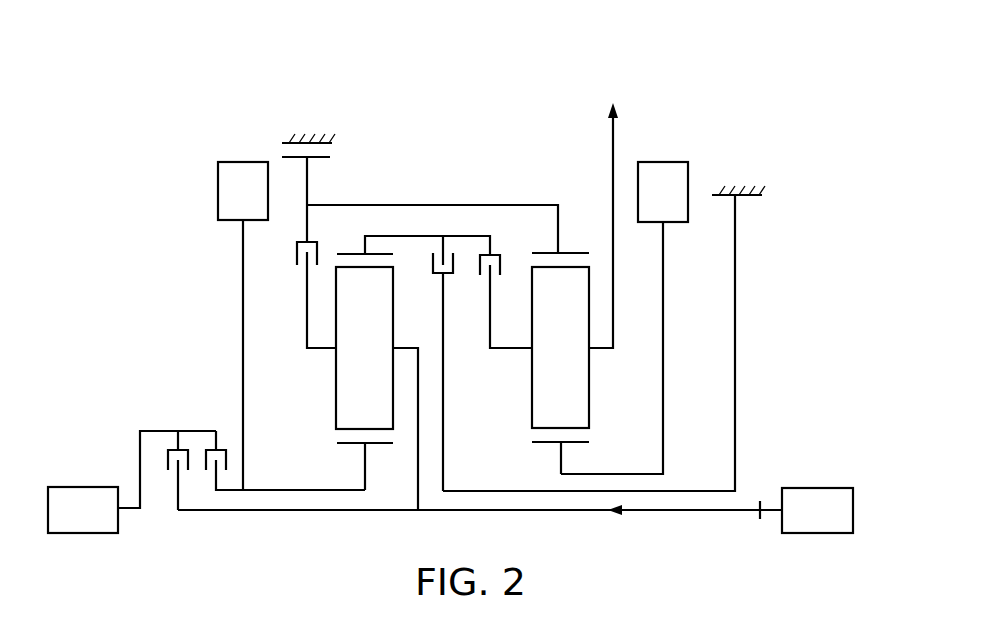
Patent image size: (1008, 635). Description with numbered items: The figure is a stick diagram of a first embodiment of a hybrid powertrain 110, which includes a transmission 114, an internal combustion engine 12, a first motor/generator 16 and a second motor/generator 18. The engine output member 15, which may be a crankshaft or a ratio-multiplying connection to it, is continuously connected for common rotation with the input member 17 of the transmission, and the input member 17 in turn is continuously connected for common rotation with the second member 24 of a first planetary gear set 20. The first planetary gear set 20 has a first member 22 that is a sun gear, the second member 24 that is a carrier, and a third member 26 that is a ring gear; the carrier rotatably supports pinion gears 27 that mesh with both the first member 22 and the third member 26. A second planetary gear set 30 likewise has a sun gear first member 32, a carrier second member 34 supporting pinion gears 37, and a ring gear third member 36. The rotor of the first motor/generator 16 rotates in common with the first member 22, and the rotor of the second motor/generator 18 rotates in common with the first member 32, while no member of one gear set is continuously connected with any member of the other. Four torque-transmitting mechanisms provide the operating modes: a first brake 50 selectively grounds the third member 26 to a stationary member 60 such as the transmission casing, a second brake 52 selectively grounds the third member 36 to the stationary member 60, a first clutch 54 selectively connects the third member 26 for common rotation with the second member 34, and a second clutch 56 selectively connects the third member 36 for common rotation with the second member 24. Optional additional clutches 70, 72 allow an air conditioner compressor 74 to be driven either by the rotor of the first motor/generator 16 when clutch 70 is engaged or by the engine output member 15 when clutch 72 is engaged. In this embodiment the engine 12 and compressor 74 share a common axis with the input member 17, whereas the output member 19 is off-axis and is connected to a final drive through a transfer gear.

The powertrain 110 is at (647, 61).
The transmission 114 is at (471, 133).
The internal combustion engine 12 is at (817, 510).
The engine output member 15 is at (767, 507).
The input member 17 is at (746, 517).
The first motor/generator 16 is at (243, 326).
The second motor/generator 18 is at (624, 318).
The output member 19 is at (613, 140).
The first planetary gear set 20 is at (361, 388).
The first member of first planetary gear set 22 is at (355, 445).
The second member of first planetary gear set 24 is at (407, 349).
The third member of first planetary gear set 26 is at (363, 253).
The pinion gears 27 is at (364, 348).
The second planetary gear set 30 is at (520, 371).
The first member of second planetary gear set 32 is at (552, 445).
The second member of second planetary gear set 34 is at (510, 350).
The third member of second planetary gear set 36 is at (573, 253).
The pinion gears 37 is at (560, 347).
The first brake 50 is at (437, 240).
The second brake 52 is at (352, 152).
The first clutch 54 is at (483, 285).
The second clutch 56 is at (298, 282).
The stationary member 60 is at (291, 133).
The first additional clutch 70 is at (225, 482).
The second additional clutch 72 is at (184, 481).
The air conditioner compressor 74 is at (132, 482).